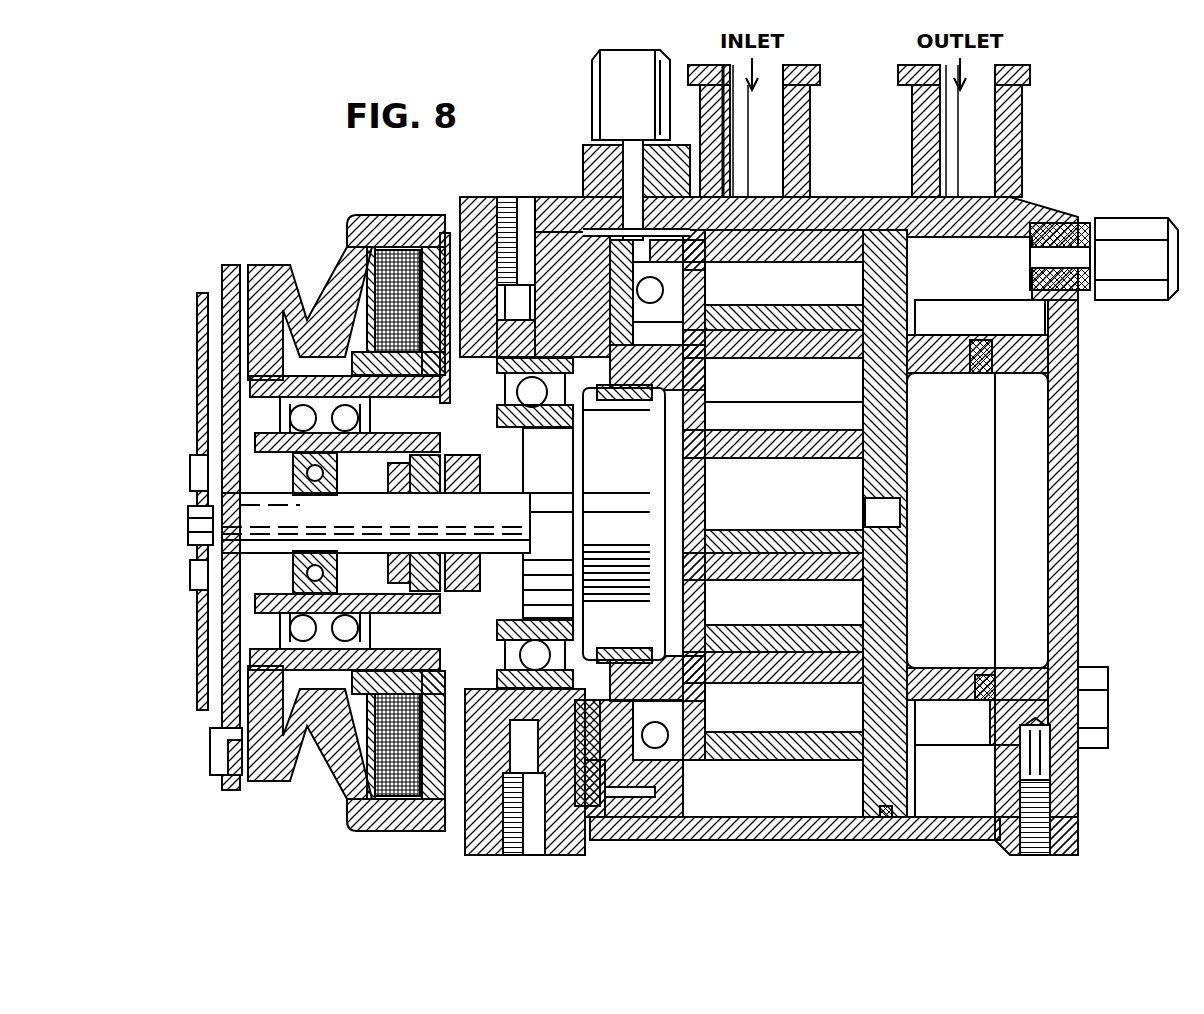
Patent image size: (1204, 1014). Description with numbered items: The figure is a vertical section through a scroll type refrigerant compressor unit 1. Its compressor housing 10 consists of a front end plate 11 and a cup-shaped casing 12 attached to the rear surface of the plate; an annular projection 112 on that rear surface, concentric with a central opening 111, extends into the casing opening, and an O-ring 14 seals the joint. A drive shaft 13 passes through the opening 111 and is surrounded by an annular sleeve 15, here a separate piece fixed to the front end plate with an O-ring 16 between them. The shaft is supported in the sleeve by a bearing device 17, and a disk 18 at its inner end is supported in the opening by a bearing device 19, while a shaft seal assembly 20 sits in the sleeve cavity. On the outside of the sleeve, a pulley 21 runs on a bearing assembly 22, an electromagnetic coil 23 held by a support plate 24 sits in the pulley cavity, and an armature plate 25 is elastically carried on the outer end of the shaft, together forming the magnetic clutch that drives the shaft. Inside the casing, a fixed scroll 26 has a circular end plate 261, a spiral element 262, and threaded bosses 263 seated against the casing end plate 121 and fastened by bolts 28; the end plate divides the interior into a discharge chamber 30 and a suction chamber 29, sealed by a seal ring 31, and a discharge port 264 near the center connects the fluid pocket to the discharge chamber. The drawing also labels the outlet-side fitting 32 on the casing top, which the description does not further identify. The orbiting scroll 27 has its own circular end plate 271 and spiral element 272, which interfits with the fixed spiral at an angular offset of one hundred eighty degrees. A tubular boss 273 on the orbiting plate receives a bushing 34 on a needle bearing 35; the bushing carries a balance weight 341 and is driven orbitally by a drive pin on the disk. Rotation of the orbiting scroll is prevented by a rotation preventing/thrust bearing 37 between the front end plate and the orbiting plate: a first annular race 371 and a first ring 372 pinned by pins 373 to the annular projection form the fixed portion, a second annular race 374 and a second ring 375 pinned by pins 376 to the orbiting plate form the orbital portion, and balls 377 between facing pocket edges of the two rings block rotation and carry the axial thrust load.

The scroll type refrigerant compressor unit 1 is at (796, 843).
The compressor housing 10 is at (488, 183).
The front end plate 11 is at (478, 856).
The cup-shaped casing 12 is at (1084, 456).
The end plate of cup-shaped casing 121 is at (1068, 540).
The drive shaft 13 is at (422, 524).
The O-ring 14 is at (585, 205).
The annular sleeve 15 is at (340, 728).
The O-ring 16 is at (452, 832).
The bearing device 17 is at (215, 598).
The disk 18 is at (533, 524).
The bearing device 19 is at (502, 422).
The shaft seal assembly 20 is at (380, 476).
The pulley 21 is at (368, 218).
The bearing assembly 22 is at (260, 628).
The electromagnetic coil 23 is at (403, 250).
The support plate 24 is at (445, 232).
The armature plate 25 is at (233, 776).
The fixed scroll 26 is at (922, 414).
The orbiting scroll 27 is at (724, 491).
The bolts 28 is at (1093, 748).
The suction chamber 29 is at (788, 807).
The discharge chamber 30 is at (942, 552).
The seal ring 31 is at (775, 146).
The outlet port 32 is at (995, 140).
The bushing 34 is at (665, 523).
The needle bearing 35 is at (637, 398).
The rotation preventing/thrust bearing 37 is at (667, 783).
The opening 111 is at (590, 350).
The annular projection 112 is at (615, 812).
The circular end plate 261 is at (893, 612).
The spiral element 262 is at (842, 530).
The internally threaded bosses 263 is at (938, 745).
The discharge port 264 is at (890, 513).
The circular end plate 271 is at (695, 593).
The spiral element 272 is at (820, 683).
The tubular boss 273 is at (665, 355).
The balance weight 341 is at (612, 700).
The first annular race 371 is at (590, 800).
The first ring 372 is at (690, 818).
The pins 373 is at (640, 800).
The second annular race 374 is at (700, 725).
The second ring 375 is at (665, 750).
The pins 376 is at (707, 310).
The balls 377 is at (698, 280).